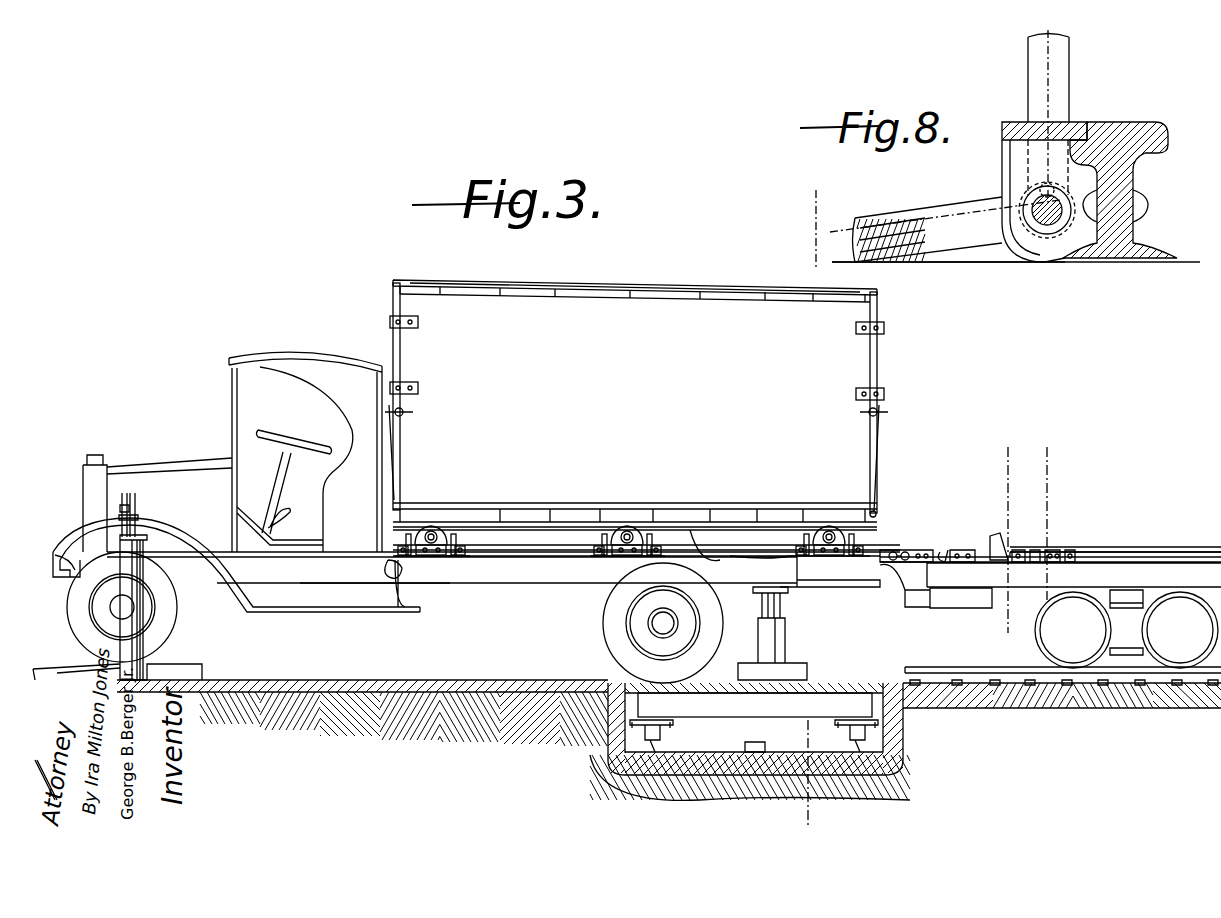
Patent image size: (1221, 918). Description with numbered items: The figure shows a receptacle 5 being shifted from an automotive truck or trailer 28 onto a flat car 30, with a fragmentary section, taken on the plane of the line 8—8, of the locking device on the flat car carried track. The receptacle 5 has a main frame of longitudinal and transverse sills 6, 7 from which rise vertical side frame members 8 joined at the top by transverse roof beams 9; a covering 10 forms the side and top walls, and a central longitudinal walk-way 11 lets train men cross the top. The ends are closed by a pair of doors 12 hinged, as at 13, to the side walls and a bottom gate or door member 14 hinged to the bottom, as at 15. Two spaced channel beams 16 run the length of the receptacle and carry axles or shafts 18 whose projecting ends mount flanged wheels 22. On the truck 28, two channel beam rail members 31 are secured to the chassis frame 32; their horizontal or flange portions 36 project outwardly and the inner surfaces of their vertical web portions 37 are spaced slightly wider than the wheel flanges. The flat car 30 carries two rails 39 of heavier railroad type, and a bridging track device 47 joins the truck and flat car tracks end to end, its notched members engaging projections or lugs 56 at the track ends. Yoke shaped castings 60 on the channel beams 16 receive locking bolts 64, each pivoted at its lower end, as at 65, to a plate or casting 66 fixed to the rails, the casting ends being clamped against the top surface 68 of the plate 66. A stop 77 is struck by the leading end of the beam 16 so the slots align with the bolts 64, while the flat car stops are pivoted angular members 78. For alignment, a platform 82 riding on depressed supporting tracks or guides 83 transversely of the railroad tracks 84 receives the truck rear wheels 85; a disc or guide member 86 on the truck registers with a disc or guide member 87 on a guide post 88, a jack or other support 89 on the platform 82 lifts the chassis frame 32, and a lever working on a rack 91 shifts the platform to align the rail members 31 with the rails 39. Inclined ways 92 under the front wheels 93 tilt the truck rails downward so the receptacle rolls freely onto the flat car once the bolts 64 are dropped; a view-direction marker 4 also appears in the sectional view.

In FIG. 3, the section line 4 is at (812, 818).
In FIG. 8, the section line 4 is at (820, 210).
In FIG. 3, the receptacle 5 is at (660, 282).
In FIG. 3, the longitudinal sills 6 is at (532, 520).
In FIG. 3, the transverse sills 7 is at (502, 510).
In FIG. 3, the vertical side frame members 8 is at (1061, 455).
In FIG. 3, the transverse roof beams 9 is at (1022, 455).
In FIG. 3, the covering 10 is at (685, 420).
In FIG. 3, the central longitudinal walk-way 11 is at (598, 272).
In FIG. 3, the doors 12 is at (393, 335).
In FIG. 3, the hinge 13 is at (396, 386).
In FIG. 3, the bottom gate or door member 14 is at (878, 468).
In FIG. 3, the hinge 15 is at (878, 512).
In FIG. 3, the channel beams 16 is at (730, 530).
In FIG. 3, the axles or shafts 18 is at (438, 528).
In FIG. 3, the flanged wheels 22 is at (415, 532).
In FIG. 3, the truck or trailer 28 is at (300, 350).
In FIG. 3, the flat car 30 is at (1150, 563).
In FIG. 8, the flat car 30 is at (995, 262).
In FIG. 3, the channel beam rail members 31 is at (538, 562).
In FIG. 3, the chassis frame 32 is at (365, 573).
In FIG. 3, the horizontal or flange portions 36 is at (775, 560).
In FIG. 3, the vertical web portions 37 is at (740, 556).
In FIG. 3, the rails 39 is at (1120, 550).
In FIG. 8, the rails 39 is at (1122, 123).
In FIG. 3, the bridging track device 47 is at (900, 568).
In FIG. 3, the projections or lugs 56 is at (880, 550).
In FIG. 3, the yoke shaped castings 60 is at (430, 530).
In FIG. 3, the locking bolts 64 is at (412, 555).
In FIG. 8, the locking bolts 64 is at (940, 198).
In FIG. 8, the pivot 65 is at (1052, 238).
In FIG. 3, the plates or castings 66 is at (448, 545).
In FIG. 8, the plates or castings 66 is at (1002, 162).
In FIG. 8, the top surface 68 is at (1045, 112).
In FIG. 3, the stop 77 is at (390, 545).
In FIG. 3, the angular members 78 is at (1002, 538).
In FIG. 3, the platform 82 is at (850, 680).
In FIG. 3, the depressed supporting tracks or guides 83 is at (660, 740).
In FIG. 3, the railroad tracks 84 is at (970, 656).
In FIG. 3, the rear wheels 85 is at (615, 626).
In FIG. 3, the disc or guide member 86 is at (122, 493).
In FIG. 3, the disc or guide member 87 is at (136, 500).
In FIG. 3, the guide post 88 is at (137, 567).
In FIG. 3, the jack or other support 89 is at (780, 630).
In FIG. 3, the rack 91 is at (775, 712).
In FIG. 3, the inclined ways 92 is at (195, 665).
In FIG. 3, the front wheels 93 is at (170, 624).